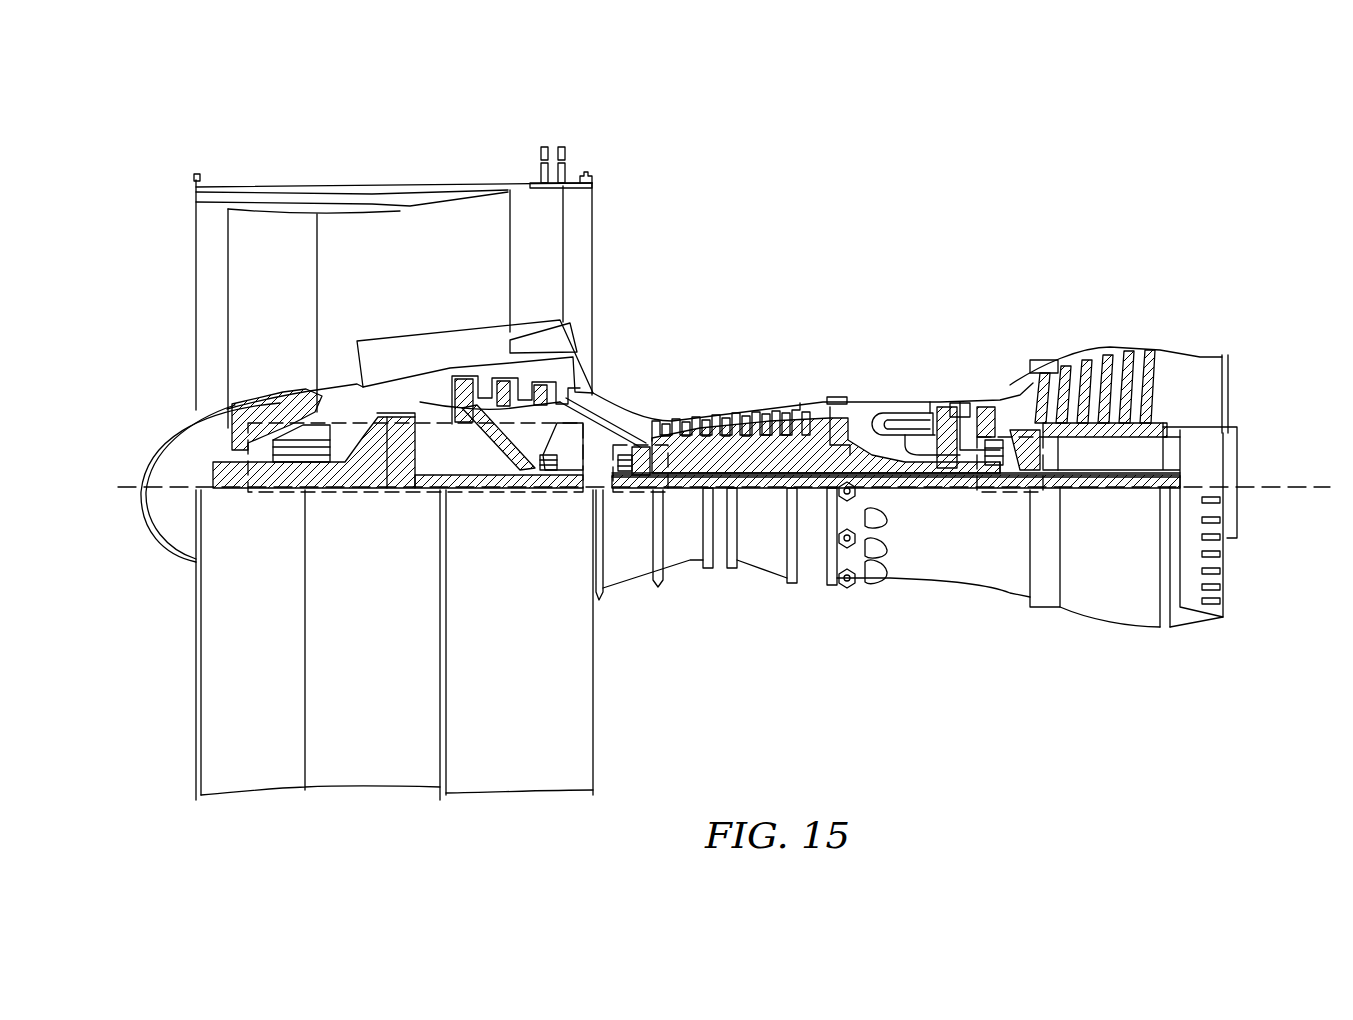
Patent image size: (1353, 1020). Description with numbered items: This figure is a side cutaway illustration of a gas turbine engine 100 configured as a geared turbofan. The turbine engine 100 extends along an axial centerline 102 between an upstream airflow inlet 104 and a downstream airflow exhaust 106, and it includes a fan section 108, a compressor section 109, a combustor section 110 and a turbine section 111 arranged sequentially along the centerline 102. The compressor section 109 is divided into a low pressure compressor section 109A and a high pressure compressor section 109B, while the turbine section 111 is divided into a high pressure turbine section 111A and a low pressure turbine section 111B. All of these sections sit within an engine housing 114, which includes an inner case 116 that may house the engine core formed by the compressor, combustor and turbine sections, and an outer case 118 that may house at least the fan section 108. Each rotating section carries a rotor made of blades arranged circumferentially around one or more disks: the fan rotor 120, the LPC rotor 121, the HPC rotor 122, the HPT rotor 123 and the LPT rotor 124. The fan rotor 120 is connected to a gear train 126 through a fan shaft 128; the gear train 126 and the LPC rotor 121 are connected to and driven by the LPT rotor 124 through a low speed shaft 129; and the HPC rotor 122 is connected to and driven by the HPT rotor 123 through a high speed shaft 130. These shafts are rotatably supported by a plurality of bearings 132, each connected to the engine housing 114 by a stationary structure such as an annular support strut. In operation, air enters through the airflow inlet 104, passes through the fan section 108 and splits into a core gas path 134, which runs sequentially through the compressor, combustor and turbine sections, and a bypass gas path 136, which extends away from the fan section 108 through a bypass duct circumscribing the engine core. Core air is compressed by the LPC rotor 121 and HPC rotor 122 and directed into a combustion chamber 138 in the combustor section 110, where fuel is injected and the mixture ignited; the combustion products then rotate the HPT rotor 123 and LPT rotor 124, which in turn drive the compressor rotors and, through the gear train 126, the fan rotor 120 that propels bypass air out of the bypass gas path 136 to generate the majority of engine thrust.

The gas turbine engine 100 is at (160, 170).
The axial centerline 102 is at (1283, 493).
The upstream airflow inlet 104 is at (196, 260).
The downstream airflow exhaust 106 is at (1228, 387).
The fan section 108 is at (360, 158).
The compressor section 109 is at (808, 96).
The low pressure compressor (LPC) section 109A is at (595, 140).
The high pressure compressor (HPC) section 109B is at (808, 326).
The combustor section 110 is at (927, 326).
The turbine section 111 is at (1185, 256).
The high pressure turbine (HPT) section 111A is at (1014, 326).
The low pressure turbine (LPT) section 111B is at (1185, 326).
The engine housing 114 is at (616, 597).
The inner case 116 is at (812, 587).
The outer case 118 is at (535, 793).
The fan rotor 120 is at (200, 408).
The LPC rotor 121 is at (470, 482).
The HPC rotor 122 is at (758, 450).
The HPT rotor 123 is at (953, 478).
The LPT rotor 124 is at (1100, 430).
The gear train 126 is at (380, 490).
The fan shaft 128 is at (248, 493).
The low speed shaft 129 is at (1115, 489).
The high speed shaft 130 is at (906, 488).
The bearings 132 is at (287, 493).
The core gas path 134 is at (614, 414).
The bypass gas path 136 is at (452, 272).
The combustion chamber 138 is at (890, 425).